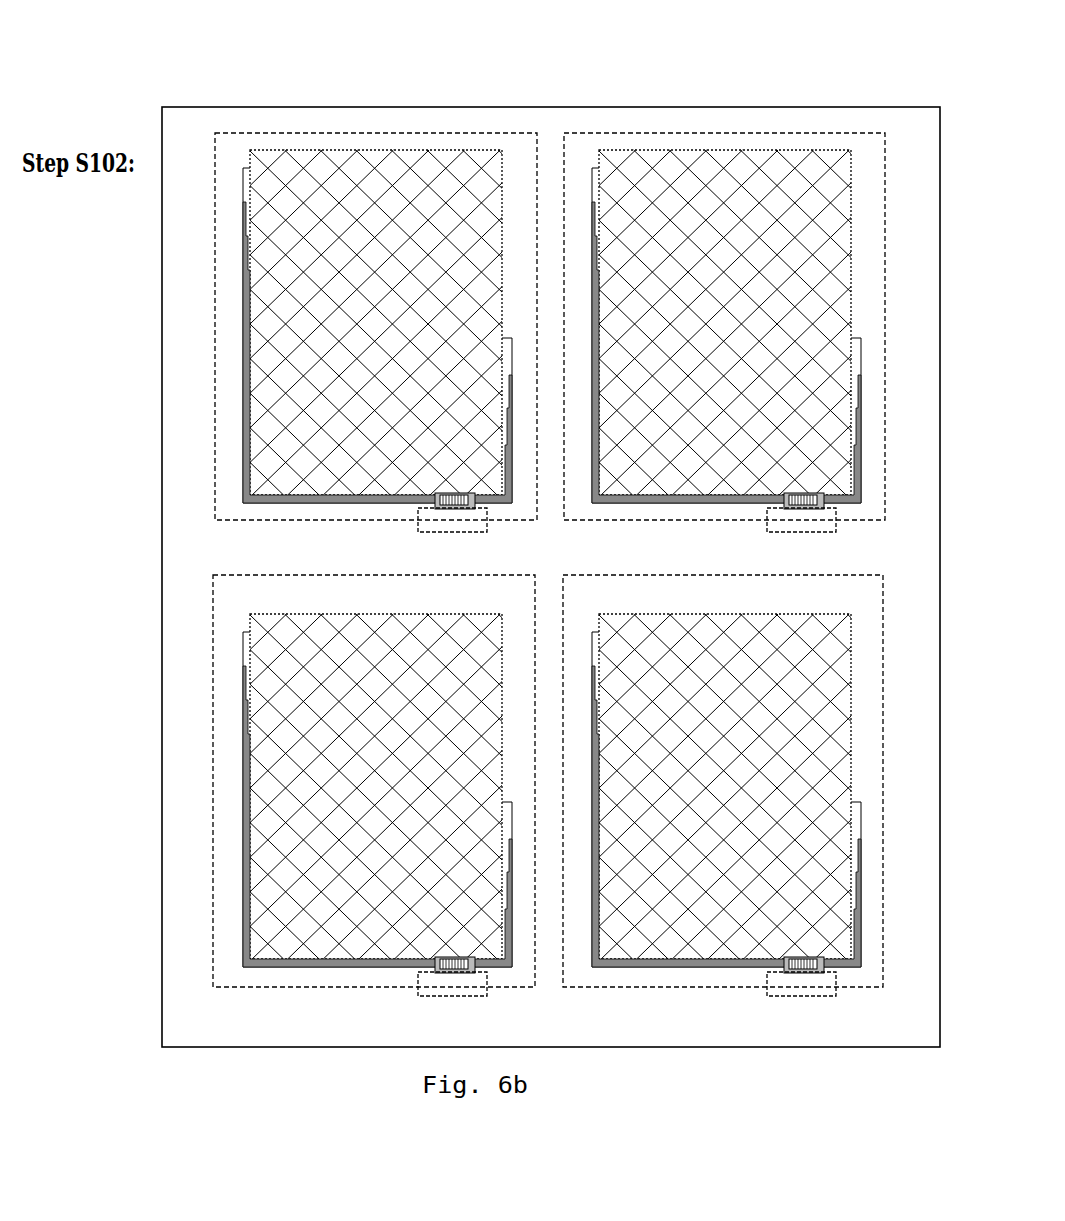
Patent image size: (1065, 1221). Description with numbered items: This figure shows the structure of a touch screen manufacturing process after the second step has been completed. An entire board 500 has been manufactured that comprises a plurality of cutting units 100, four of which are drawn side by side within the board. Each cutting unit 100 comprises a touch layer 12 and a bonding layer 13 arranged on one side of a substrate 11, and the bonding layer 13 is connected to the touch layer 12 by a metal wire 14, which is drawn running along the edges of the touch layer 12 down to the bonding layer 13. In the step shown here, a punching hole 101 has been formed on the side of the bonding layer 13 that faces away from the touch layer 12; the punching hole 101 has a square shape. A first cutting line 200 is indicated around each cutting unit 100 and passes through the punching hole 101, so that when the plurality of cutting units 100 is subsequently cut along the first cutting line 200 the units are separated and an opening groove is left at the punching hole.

The entire board 500 is at (561, 92).
The cutting unit 100 is at (400, 127).
The first cutting line 200 is at (320, 133).
The substrate 11 is at (563, 571).
The touch layer 12 is at (470, 160).
The bonding layer 13 is at (488, 508).
The metal wire 14 is at (340, 503).
The punching hole 101 is at (440, 532).